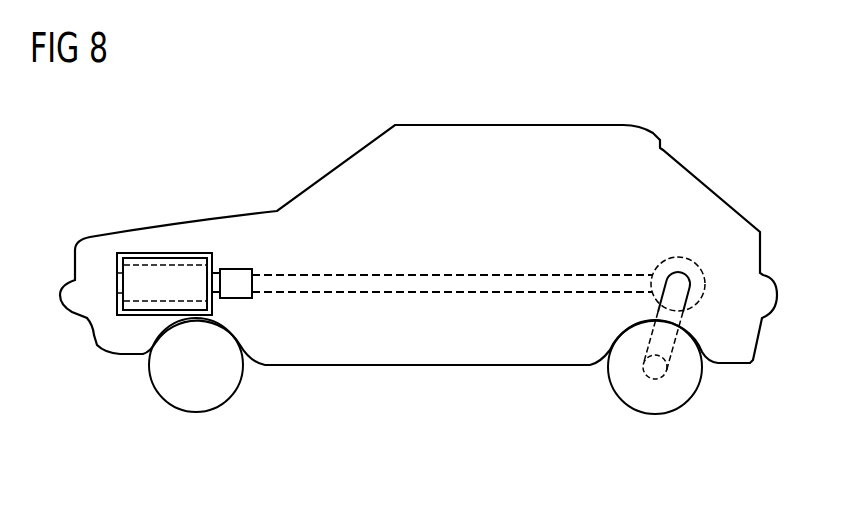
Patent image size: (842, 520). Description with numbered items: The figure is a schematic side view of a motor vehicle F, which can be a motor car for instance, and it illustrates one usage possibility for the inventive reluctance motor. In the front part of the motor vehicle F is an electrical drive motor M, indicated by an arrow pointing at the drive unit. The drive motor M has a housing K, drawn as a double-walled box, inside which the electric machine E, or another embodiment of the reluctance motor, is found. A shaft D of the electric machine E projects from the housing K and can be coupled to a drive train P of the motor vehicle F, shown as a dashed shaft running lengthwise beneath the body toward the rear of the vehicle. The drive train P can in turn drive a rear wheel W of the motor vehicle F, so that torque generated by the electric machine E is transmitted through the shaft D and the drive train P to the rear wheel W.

The motor vehicle F is at (500, 125).
The housing K is at (131, 253).
The electric machine E is at (160, 258).
The electrical drive motor M is at (192, 240).
The shaft D is at (215, 283).
The drive train P is at (475, 275).
The rear wheel W is at (656, 404).